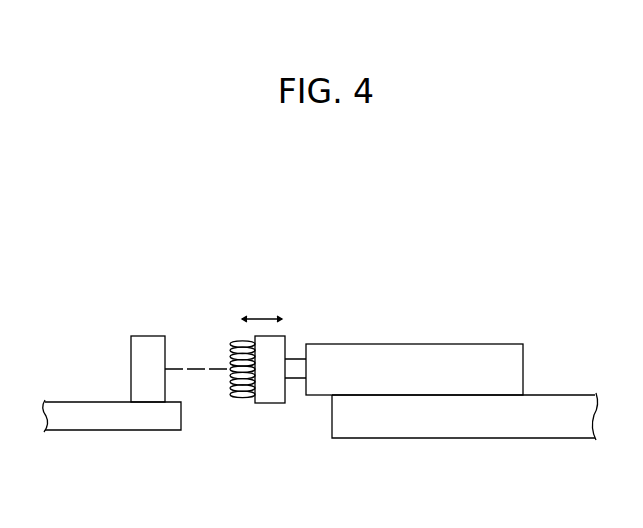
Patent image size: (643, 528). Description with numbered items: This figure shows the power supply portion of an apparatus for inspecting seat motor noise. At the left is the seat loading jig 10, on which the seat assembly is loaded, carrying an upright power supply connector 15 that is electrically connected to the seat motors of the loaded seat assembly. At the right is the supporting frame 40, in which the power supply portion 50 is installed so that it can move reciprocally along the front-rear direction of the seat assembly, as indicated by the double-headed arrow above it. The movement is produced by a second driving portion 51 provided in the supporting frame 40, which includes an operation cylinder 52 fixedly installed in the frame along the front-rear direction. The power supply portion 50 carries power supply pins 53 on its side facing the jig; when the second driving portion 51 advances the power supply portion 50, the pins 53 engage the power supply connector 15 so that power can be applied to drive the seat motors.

The seat loading jig 10 is at (77, 423).
The power supply connector 15 is at (145, 343).
The supporting frame 40 is at (427, 413).
The power supply portion 50 is at (277, 404).
The second driving portion 51 is at (457, 343).
The operation cylinder 52 is at (392, 344).
The power supply pins 53 is at (243, 397).